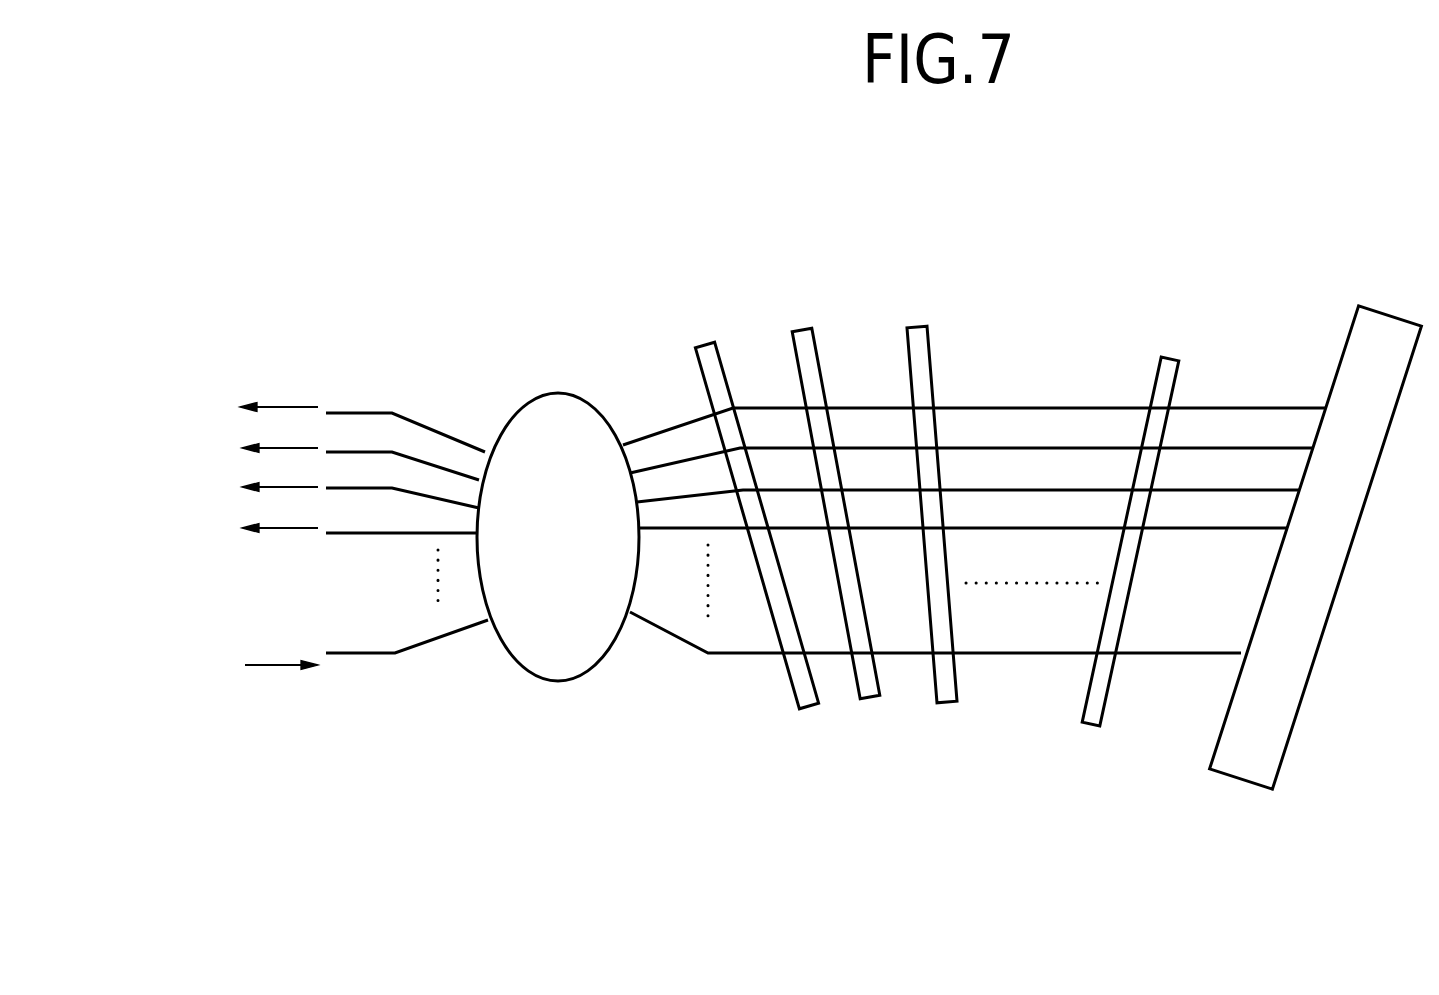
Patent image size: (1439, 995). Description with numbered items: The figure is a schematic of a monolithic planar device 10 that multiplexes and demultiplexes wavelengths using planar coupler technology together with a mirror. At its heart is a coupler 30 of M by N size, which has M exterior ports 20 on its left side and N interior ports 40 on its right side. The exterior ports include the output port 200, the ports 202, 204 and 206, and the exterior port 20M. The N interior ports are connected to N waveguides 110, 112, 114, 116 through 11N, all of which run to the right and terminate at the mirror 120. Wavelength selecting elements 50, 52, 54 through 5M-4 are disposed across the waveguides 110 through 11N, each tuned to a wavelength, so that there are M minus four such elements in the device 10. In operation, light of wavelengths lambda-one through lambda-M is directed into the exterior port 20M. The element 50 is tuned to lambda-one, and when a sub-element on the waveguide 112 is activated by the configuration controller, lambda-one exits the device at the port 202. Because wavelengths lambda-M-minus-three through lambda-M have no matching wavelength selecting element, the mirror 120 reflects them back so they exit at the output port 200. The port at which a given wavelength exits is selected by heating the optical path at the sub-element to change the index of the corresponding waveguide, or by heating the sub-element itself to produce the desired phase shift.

The monolithic planar device 10 is at (926, 245).
The exterior ports 20 is at (483, 383).
The coupler 30 is at (553, 412).
The interior ports 40 is at (633, 395).
The wavelength selecting element 50 is at (810, 708).
The wavelength selecting element 52 is at (870, 700).
The wavelength selecting element 54 is at (948, 702).
The wavelength selecting element 5M-4 is at (1088, 727).
The waveguide 110 is at (974, 408).
The waveguide 112 is at (971, 444).
The waveguide 114 is at (968, 479).
The waveguide 116 is at (963, 511).
The waveguide 11N is at (935, 632).
The mirror 120 is at (1400, 306).
The output port 200 is at (286, 414).
The port 202 is at (333, 449).
The port 204 is at (333, 484).
The port 206 is at (333, 523).
The exterior port 20M is at (320, 645).